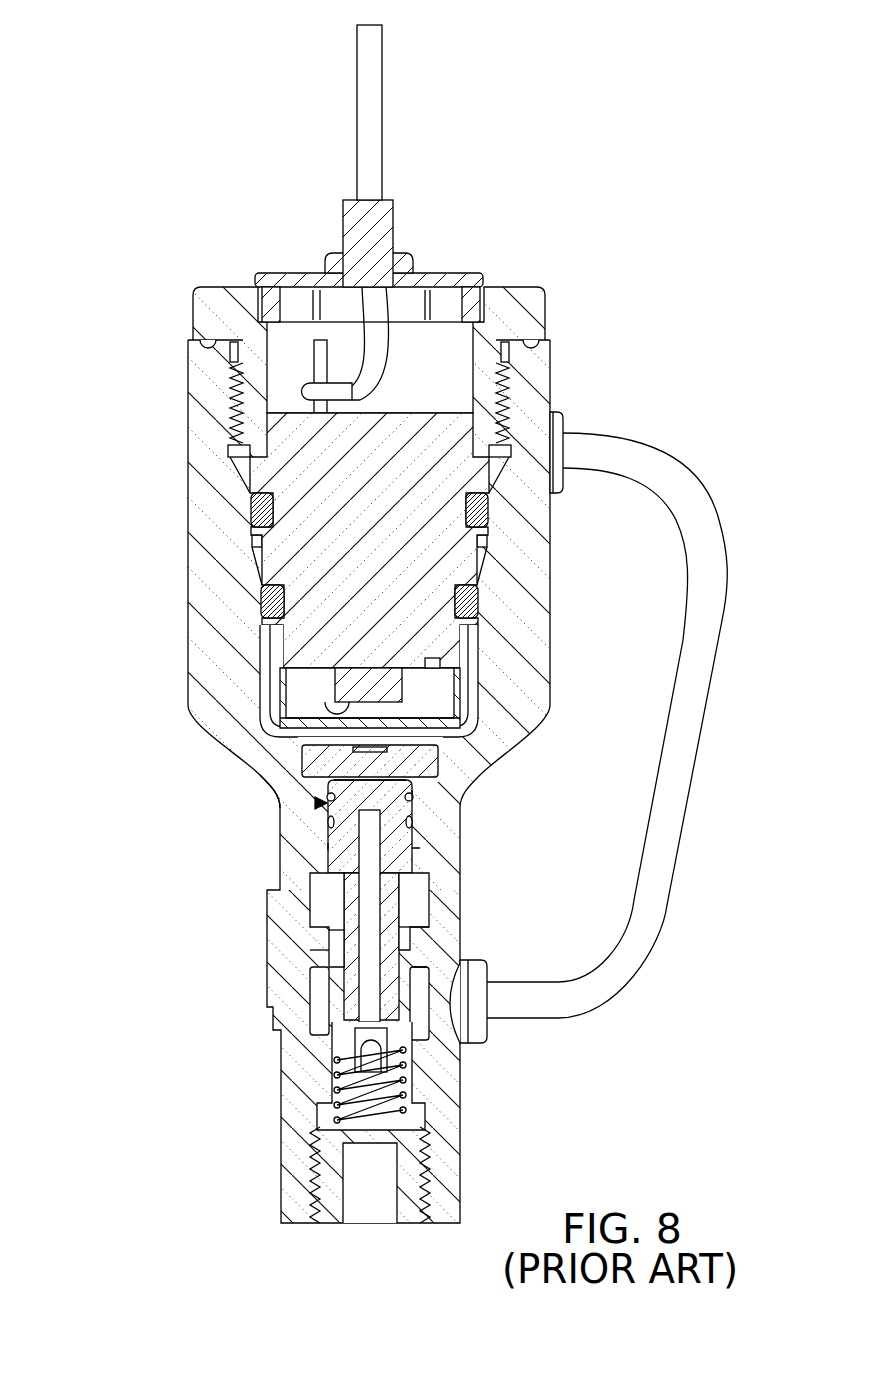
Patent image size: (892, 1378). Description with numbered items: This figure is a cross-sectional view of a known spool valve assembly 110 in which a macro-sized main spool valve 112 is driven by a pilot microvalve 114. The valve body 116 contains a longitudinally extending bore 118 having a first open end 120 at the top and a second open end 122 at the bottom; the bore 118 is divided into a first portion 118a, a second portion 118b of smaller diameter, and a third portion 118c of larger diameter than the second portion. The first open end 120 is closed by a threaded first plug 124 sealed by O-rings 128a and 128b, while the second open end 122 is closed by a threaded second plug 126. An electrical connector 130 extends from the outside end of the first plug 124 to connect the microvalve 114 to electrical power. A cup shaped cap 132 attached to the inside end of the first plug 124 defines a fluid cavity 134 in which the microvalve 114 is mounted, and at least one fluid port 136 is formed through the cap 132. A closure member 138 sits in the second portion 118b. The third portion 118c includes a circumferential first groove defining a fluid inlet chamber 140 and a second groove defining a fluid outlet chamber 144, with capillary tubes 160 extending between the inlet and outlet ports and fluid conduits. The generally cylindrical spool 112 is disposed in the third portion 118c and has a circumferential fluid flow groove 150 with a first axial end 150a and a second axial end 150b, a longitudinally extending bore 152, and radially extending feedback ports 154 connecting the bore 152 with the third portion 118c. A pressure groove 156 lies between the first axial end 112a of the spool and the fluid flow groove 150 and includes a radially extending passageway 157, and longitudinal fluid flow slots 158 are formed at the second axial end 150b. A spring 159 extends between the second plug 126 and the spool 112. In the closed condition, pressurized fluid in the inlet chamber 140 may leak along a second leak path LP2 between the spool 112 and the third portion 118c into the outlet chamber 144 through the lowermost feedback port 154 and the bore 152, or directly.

The spool valve assembly 110 is at (186, 158).
The electrical connector 130 is at (347, 228).
The first plug 124 is at (200, 322).
The first open end 120 is at (497, 330).
The valve body 116 is at (203, 430).
The longitudinally extending bore 118 is at (490, 477).
The capillary tubes 160 is at (700, 497).
The O-ring 128b is at (488, 515).
The O-ring 128a is at (478, 605).
The first portion of the bore 118a is at (268, 690).
The pilot microvalve 114 is at (395, 677).
The cup shaped cap 132 is at (283, 697).
The fluid cavity 134 is at (440, 695).
The fluid port 136 is at (437, 716).
The closure member 138 is at (435, 762).
The second portion of the bore 118b is at (300, 752).
The first axial end of the spool 112a is at (315, 803).
The third portion of the bore 118c is at (330, 843).
The spool 112 is at (345, 790).
The pressure groove 156 is at (412, 820).
The feedback ports 154 is at (318, 880).
The second leak path LP2 is at (413, 848).
The radially extending passageway 157 is at (335, 935).
The first axial end of the fluid flow groove 150a is at (429, 887).
The fluid inlet chamber 140 is at (267, 907).
The fluid flow groove 150 is at (405, 905).
The fluid flow slots 158 is at (315, 950).
The second axial end of the fluid flow groove 150b is at (424, 950).
The longitudinally extending bore of the spool 152 is at (330, 985).
The fluid outlet chamber 144 is at (465, 1047).
The spring 159 is at (412, 1092).
The second plug 126 is at (325, 1205).
The second open end 122 is at (418, 1190).